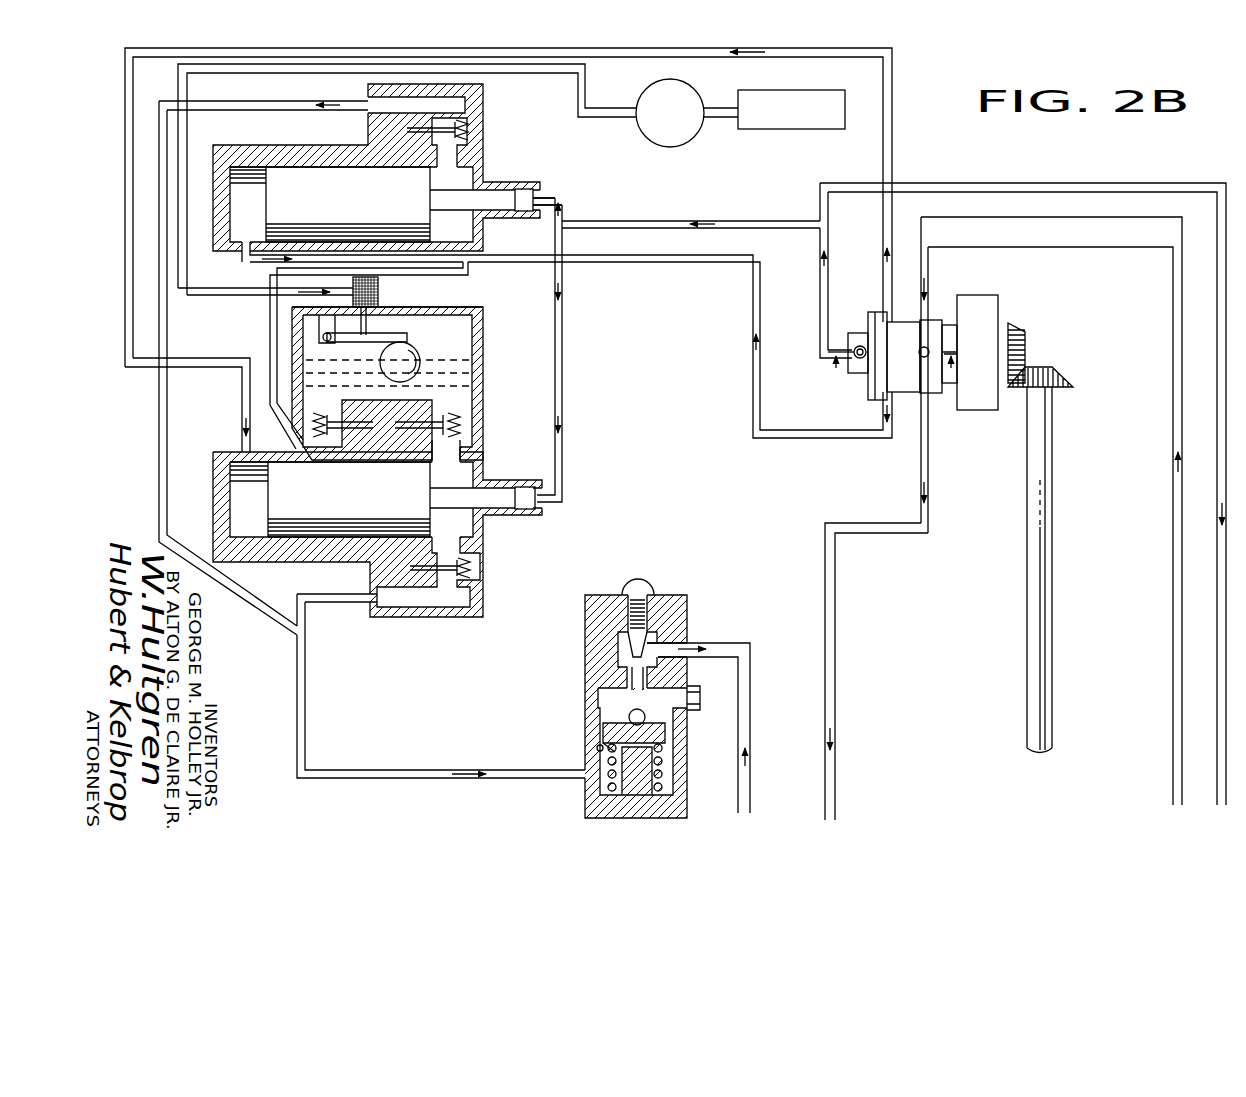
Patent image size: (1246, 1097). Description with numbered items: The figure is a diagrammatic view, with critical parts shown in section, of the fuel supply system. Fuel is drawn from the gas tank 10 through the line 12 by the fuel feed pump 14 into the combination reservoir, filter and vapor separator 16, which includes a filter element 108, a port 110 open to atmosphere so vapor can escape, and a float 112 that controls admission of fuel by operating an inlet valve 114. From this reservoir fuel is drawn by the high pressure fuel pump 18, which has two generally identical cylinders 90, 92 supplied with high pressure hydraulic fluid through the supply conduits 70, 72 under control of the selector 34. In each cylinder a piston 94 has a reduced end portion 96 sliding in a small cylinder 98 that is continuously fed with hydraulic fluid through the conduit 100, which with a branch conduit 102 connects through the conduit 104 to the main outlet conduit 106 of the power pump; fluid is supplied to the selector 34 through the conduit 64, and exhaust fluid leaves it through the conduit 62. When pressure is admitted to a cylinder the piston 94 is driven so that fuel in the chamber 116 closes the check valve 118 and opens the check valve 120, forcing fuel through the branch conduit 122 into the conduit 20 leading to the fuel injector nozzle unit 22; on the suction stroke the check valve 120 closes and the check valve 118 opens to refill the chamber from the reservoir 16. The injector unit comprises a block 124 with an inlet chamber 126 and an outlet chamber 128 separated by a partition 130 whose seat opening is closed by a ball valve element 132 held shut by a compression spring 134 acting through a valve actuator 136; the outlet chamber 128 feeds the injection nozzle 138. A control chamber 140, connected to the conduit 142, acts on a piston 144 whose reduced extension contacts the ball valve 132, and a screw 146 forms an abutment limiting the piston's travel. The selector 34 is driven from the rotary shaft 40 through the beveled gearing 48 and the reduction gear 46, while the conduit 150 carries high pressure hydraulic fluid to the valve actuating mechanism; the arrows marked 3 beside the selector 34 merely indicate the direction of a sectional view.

The shaft 3 is at (896, 354).
The gas tank 10 is at (816, 118).
The line 12 is at (560, 62).
The fuel feed pump 14 is at (672, 137).
The filter, vapor separator and reservoir unit 16 is at (409, 368).
The high pressure fuel pump 18 is at (375, 350).
The line 20 is at (308, 718).
The fuel injector nozzle unit 22 is at (635, 688).
The selector 34 is at (868, 320).
The rotary shaft 40 is at (1047, 712).
The reduction gear 46 is at (983, 300).
The beveled gearing 48 is at (1050, 372).
The conduit 62 is at (820, 325).
The conduit 64 is at (927, 306).
The supply conduit 70 is at (125, 283).
The supply conduit 72 is at (822, 437).
The cylinder 90 is at (235, 478).
The cylinder 92 is at (253, 173).
The piston 94 is at (372, 196).
The reduced end portion 96 is at (486, 349).
The small cylinder 98 is at (522, 190).
The conduit 100 is at (563, 418).
The branch conduit 102 is at (565, 200).
The conduit 104 is at (730, 221).
The main outlet conduit 106 is at (1175, 686).
The filter element 108 is at (378, 304).
The port 110 is at (458, 307).
The float 112 is at (416, 360).
The inlet valve 114 is at (368, 326).
The chamber 116 is at (470, 468).
The check valve 118 is at (462, 420).
The check valve 120 is at (422, 130).
The branch conduit 122 is at (318, 597).
The block 124 is at (593, 634).
The inlet chamber 126 is at (600, 748).
The outlet chamber 128 is at (598, 694).
The partition 130 is at (600, 703).
The valve element 132 is at (630, 718).
The compression spring 134 is at (610, 786).
The valve actuator 136 is at (667, 730).
The injection nozzle 138 is at (690, 688).
The control chamber 140 is at (660, 640).
The conduit 142 is at (750, 727).
The piston 144 is at (632, 678).
The screw 146 is at (644, 590).
The conduit 150 is at (832, 757).